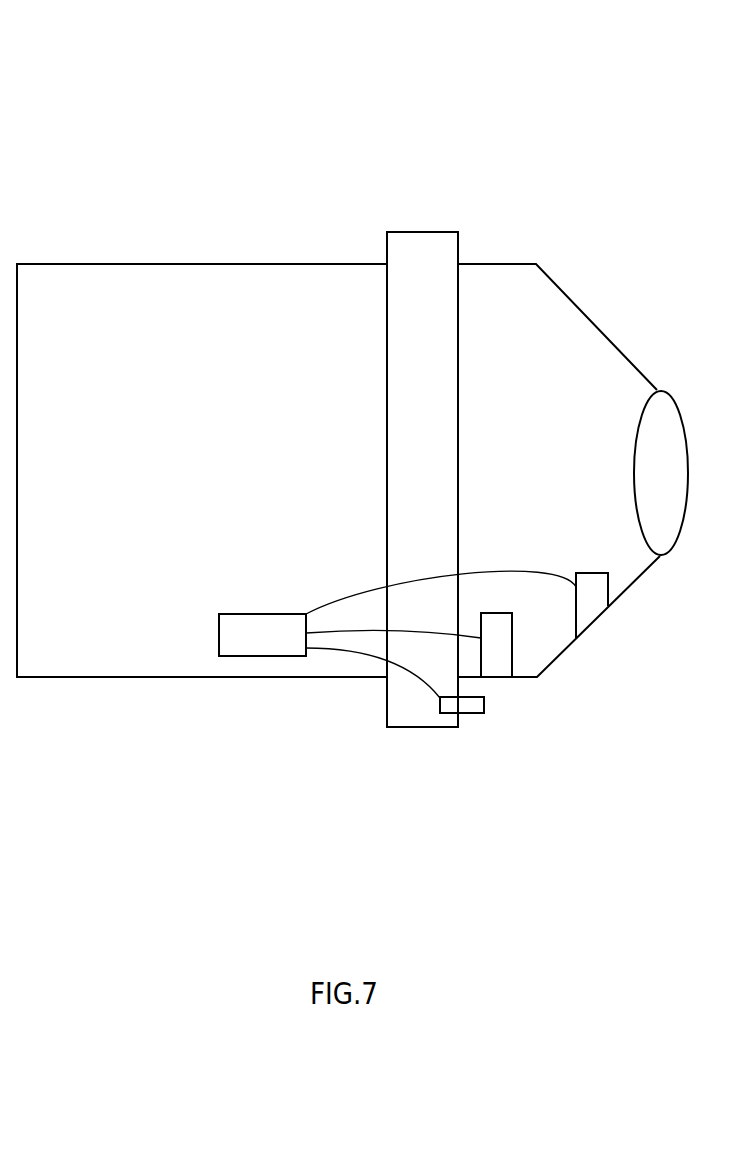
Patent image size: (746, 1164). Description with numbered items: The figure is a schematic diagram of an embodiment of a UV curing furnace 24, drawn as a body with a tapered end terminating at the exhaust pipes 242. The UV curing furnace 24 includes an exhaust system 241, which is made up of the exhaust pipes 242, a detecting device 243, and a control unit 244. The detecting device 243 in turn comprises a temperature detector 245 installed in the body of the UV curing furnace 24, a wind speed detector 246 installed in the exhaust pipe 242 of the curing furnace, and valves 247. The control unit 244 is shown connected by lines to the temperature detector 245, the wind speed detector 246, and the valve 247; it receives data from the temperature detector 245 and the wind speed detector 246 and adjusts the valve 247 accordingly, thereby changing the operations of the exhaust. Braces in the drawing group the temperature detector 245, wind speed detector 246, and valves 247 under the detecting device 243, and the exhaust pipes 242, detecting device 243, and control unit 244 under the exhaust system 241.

The UV curing furnace 24 is at (283, 175).
The exhaust system 241 is at (620, 828).
The exhaust pipes 242 is at (630, 558).
The detecting device 243 is at (600, 765).
The control unit 244 is at (262, 656).
The temperature detector 245 is at (503, 677).
The wind speed detector 246 is at (594, 622).
The valves 247 is at (476, 714).